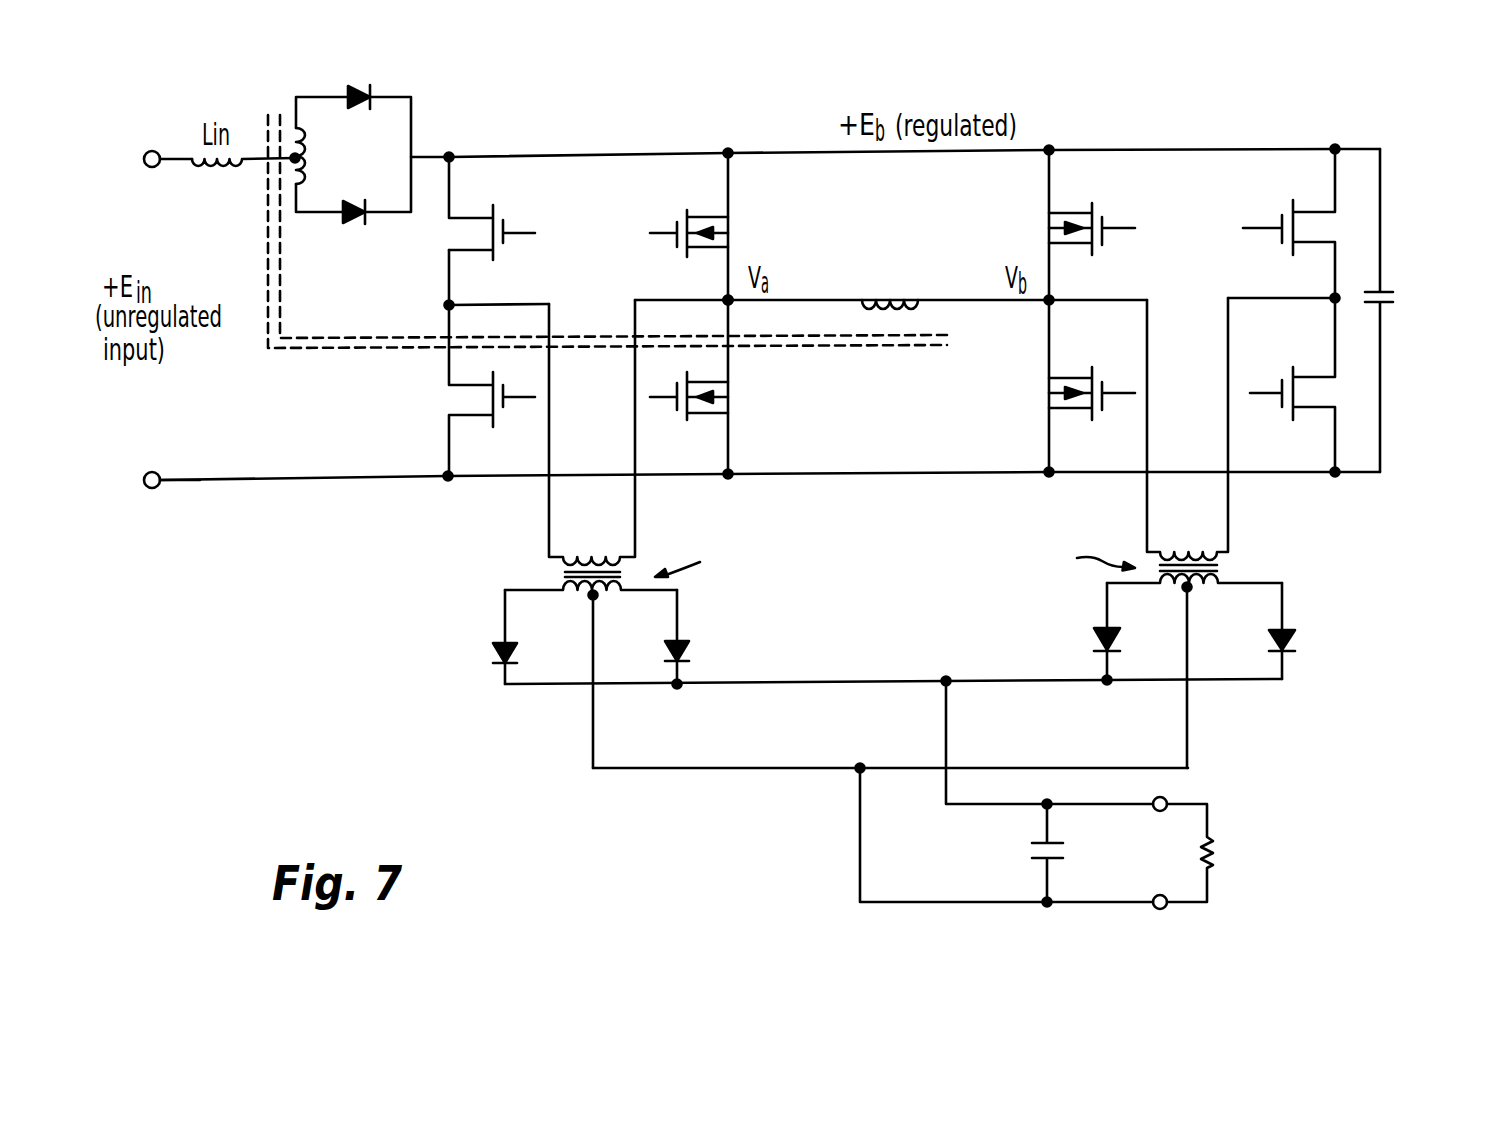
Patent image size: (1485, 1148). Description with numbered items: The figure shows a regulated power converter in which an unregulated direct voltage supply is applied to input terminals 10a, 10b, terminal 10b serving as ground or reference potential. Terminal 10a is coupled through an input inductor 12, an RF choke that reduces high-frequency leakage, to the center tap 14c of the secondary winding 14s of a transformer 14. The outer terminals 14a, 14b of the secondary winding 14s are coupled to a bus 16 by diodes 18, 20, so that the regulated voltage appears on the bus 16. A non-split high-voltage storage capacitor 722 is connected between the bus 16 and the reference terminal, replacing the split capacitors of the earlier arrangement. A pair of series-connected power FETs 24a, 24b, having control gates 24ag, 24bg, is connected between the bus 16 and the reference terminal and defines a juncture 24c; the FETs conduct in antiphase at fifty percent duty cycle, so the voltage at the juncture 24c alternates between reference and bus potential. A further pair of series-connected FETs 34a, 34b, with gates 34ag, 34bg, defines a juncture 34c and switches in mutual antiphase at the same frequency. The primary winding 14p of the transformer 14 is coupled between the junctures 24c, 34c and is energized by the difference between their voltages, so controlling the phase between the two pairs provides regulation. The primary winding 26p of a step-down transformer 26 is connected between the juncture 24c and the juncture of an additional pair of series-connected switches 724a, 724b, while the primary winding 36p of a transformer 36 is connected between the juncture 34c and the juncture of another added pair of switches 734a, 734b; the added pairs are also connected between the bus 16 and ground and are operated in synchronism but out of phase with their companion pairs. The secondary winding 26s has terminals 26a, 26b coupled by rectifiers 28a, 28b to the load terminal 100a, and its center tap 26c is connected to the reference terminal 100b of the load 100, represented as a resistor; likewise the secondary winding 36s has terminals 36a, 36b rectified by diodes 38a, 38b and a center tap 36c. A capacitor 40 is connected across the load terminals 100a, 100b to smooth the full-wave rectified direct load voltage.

The input terminal 10a is at (143, 159).
The input terminal 10b is at (144, 480).
The input inductor 12 is at (222, 164).
The transformer 14 is at (367, 322).
The outer terminal of secondary winding 14a is at (296, 97).
The outer terminal of secondary winding 14b is at (297, 214).
The center tap 14c is at (295, 158).
The secondary winding 14s is at (303, 172).
The primary winding 14p is at (890, 300).
The bus 16 is at (537, 157).
The unidirectional current conducting device 18 is at (360, 109).
The unidirectional current conducting device 20 is at (355, 225).
The power FET 24a is at (687, 211).
The control gate 24ag is at (650, 233).
The power FET 24b is at (672, 397).
The control gate 24bg is at (665, 398).
The juncture 24c is at (728, 300).
The step-down transformer 26 is at (730, 584).
The primary winding 26p is at (592, 557).
The secondary winding 26s is at (560, 582).
The secondary winding terminal 26a is at (567, 596).
The secondary winding terminal 26b is at (616, 594).
The center tap 26c is at (598, 595).
The rectifier 28a is at (493, 653).
The rectifier 28b is at (687, 653).
The power FET 34a is at (1092, 203).
The control gate 34ag is at (1135, 228).
The power FET 34b is at (1110, 360).
The gate 34bg is at (1135, 394).
The juncture 34c is at (1049, 301).
The transformer 36 is at (1068, 581).
The primary winding 36p is at (1178, 552).
The secondary winding 36s is at (1213, 575).
The secondary winding terminal 36a is at (1168, 591).
The secondary winding terminal 36b is at (1211, 592).
The center tap 36c is at (1193, 593).
The rectifier 38a is at (1094, 641).
The rectifier 38b is at (1294, 647).
The capacitor 40 is at (1065, 856).
The load 100 is at (1209, 854).
The load terminal 100a is at (1166, 799).
The reference terminal 100b is at (1166, 908).
The non-split capacitor 722 is at (1395, 301).
The switch 724a is at (495, 209).
The switch 724b is at (495, 430).
The switch 734a is at (1292, 210).
The switch 734b is at (1293, 367).